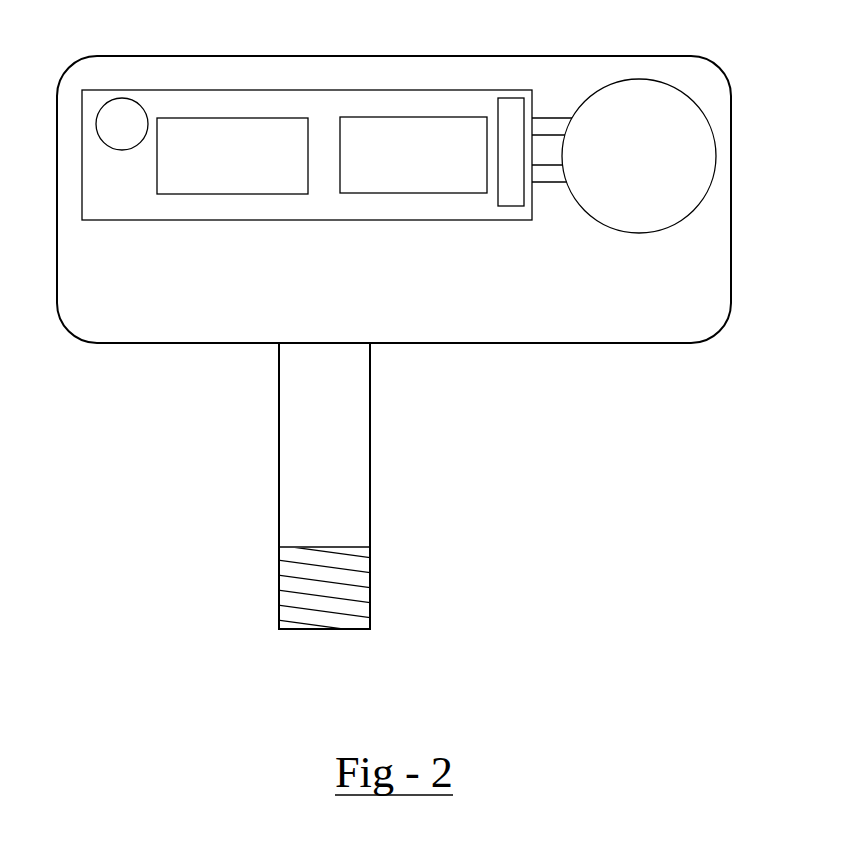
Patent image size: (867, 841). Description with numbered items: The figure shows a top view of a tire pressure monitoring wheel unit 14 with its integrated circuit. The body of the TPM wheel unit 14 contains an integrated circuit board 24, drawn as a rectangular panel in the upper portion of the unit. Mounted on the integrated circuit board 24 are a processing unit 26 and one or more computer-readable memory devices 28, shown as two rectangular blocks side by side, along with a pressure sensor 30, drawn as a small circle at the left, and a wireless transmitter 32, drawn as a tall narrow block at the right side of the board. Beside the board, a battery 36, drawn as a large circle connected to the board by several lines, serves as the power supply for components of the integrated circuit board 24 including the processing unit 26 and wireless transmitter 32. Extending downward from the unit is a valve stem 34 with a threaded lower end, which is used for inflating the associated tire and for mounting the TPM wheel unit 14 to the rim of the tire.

The TPM wheel unit 14 is at (738, 45).
The integrated circuit board 24 is at (318, 208).
The processing unit 26 is at (222, 178).
The computer-readable memory device 28 is at (405, 180).
The pressure sensor 30 is at (122, 138).
The wireless transmitter 32 is at (510, 198).
The valve stem 34 is at (362, 465).
The battery 36 is at (638, 222).